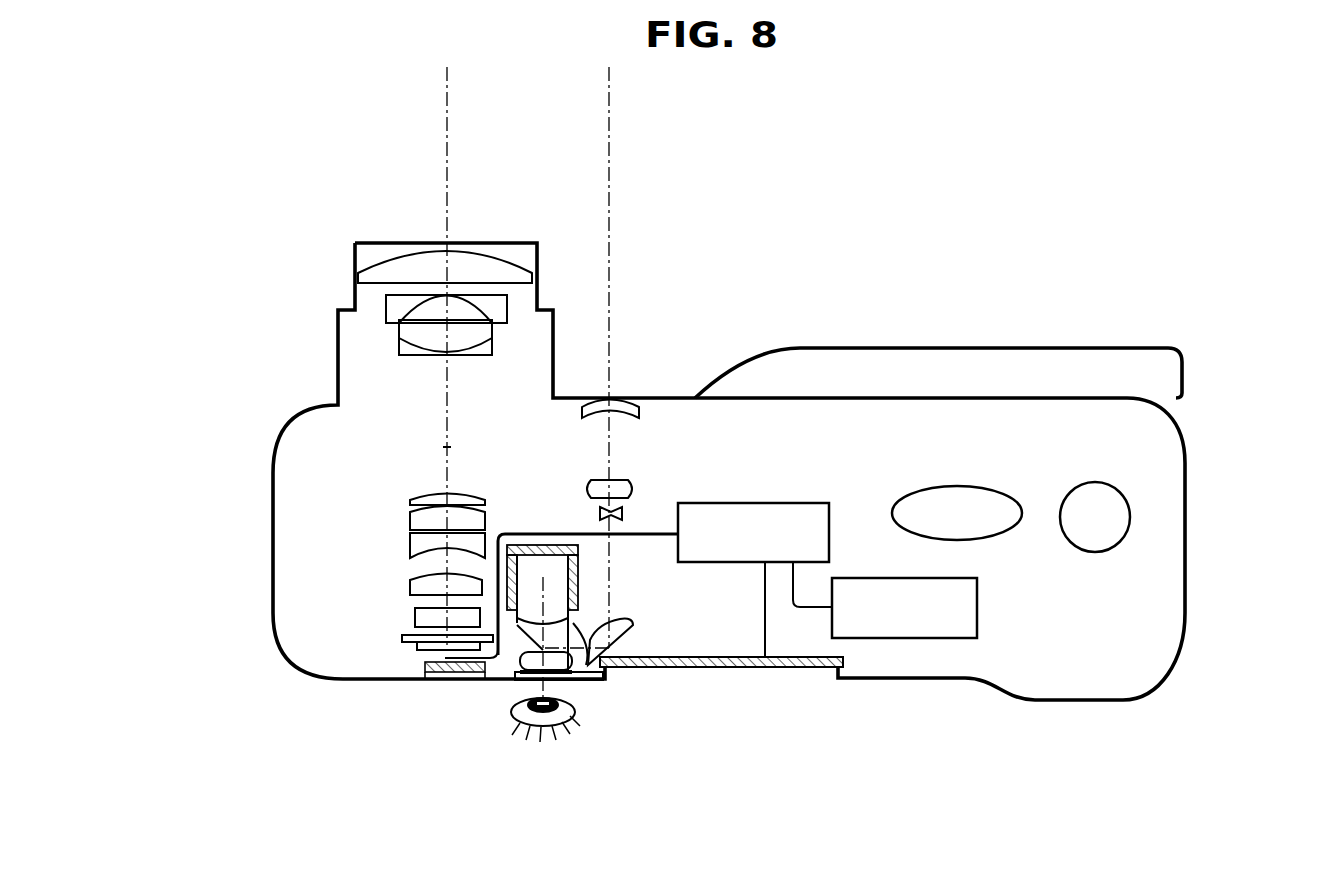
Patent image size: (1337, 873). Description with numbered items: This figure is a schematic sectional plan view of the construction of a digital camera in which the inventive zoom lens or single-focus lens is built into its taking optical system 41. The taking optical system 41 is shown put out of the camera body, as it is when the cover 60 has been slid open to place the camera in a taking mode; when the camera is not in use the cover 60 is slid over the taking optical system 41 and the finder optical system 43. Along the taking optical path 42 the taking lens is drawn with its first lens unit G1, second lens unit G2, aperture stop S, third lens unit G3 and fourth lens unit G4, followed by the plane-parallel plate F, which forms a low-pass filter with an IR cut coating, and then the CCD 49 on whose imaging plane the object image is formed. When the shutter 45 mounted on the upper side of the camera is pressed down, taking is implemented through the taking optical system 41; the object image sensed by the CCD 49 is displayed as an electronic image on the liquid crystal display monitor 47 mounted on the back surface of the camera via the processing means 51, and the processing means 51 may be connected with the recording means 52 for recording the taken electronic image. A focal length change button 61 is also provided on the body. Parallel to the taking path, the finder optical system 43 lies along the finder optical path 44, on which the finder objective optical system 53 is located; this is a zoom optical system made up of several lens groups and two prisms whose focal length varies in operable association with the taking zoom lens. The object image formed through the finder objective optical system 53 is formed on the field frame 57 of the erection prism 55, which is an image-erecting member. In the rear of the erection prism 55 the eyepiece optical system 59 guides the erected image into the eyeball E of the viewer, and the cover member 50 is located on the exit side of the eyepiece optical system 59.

The taking optical system 41 is at (299, 423).
The taking optical path 42 is at (446, 127).
The finder optical system 43 is at (653, 414).
The finder optical path 44 is at (609, 118).
The shutter 45 is at (993, 525).
The liquid crystal display monitor 47 is at (818, 668).
The CCD 49 is at (418, 651).
The cover member 50 is at (522, 676).
The processing means 51 is at (830, 520).
The recording means 52 is at (935, 638).
The finder objective optical system 53 is at (657, 491).
The erection prism 55 is at (560, 590).
The field frame 57 is at (535, 545).
The eyepiece optical system 59 is at (575, 672).
The cover 60 is at (1000, 348).
The focal length change button 61 is at (1097, 505).
The first lens unit G1 is at (347, 275).
The second lens unit G2 is at (383, 327).
The third lens unit G3 is at (393, 527).
The fourth lens unit G4 is at (393, 583).
The aperture stop S is at (492, 447).
The plane-parallel plate F is at (412, 616).
The eyeball E is at (547, 762).